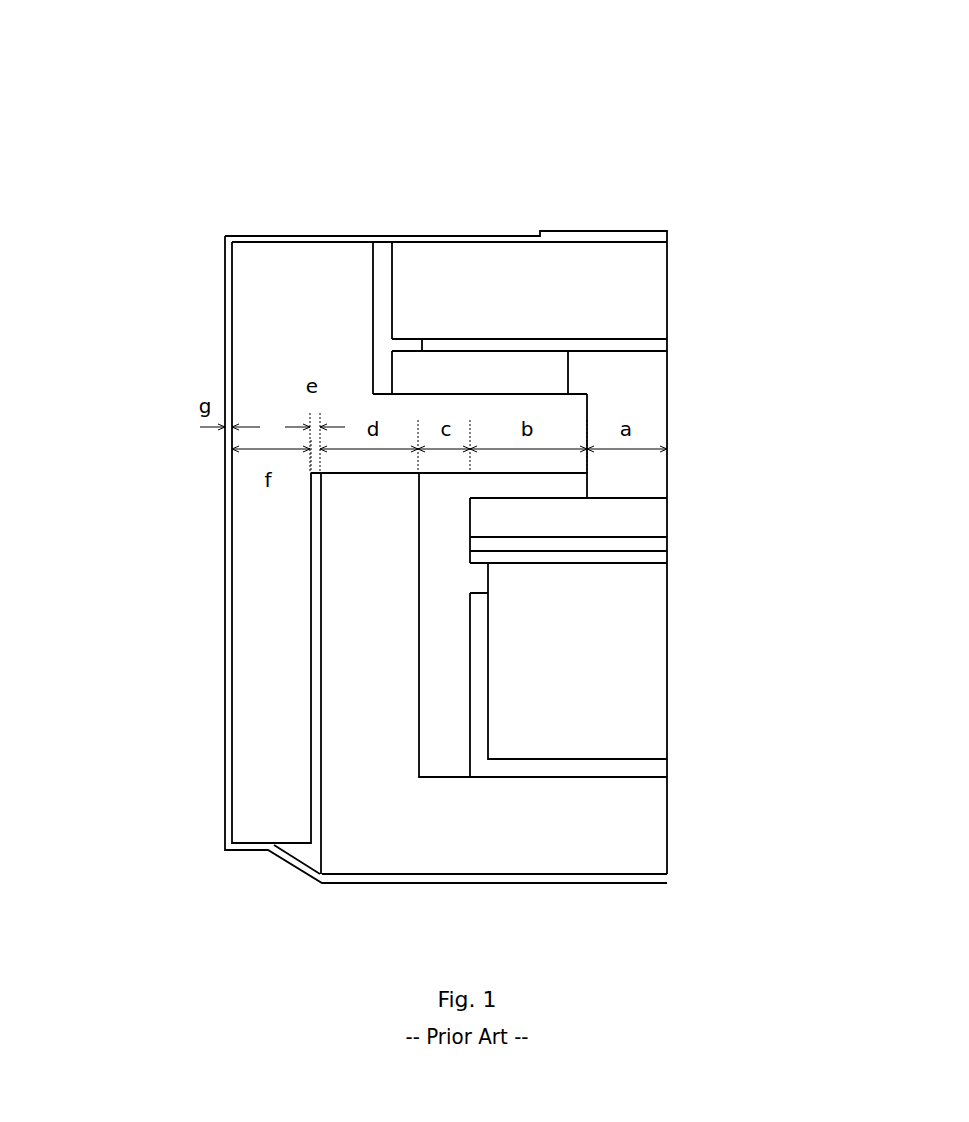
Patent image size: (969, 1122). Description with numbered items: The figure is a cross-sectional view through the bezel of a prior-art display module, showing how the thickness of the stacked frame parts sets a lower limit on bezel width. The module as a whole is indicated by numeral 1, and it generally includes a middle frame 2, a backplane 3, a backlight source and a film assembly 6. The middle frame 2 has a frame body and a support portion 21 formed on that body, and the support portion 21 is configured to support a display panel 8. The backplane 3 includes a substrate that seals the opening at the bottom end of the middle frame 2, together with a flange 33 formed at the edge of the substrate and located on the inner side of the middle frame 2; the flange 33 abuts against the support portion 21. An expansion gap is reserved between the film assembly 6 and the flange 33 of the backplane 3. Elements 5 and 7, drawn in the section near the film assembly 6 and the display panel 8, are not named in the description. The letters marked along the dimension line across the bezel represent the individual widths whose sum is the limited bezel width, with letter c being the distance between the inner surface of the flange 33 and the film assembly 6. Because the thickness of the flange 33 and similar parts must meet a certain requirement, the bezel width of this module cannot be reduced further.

The housing 1 is at (327, 237).
The middle frame 2 is at (297, 530).
The backplane 3 is at (365, 737).
The fan unit 5 is at (535, 686).
The film assembly 6 is at (570, 552).
The partition 7 is at (535, 373).
The display panel 8 is at (627, 282).
The support portion 21 is at (456, 420).
The flange 33 is at (370, 678).